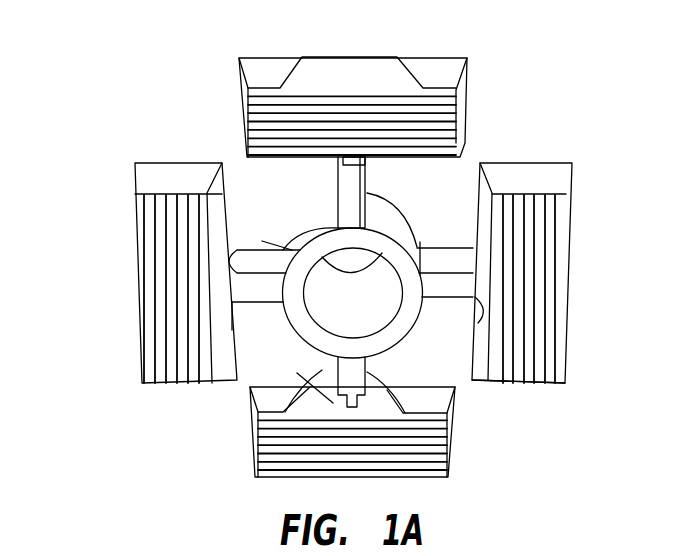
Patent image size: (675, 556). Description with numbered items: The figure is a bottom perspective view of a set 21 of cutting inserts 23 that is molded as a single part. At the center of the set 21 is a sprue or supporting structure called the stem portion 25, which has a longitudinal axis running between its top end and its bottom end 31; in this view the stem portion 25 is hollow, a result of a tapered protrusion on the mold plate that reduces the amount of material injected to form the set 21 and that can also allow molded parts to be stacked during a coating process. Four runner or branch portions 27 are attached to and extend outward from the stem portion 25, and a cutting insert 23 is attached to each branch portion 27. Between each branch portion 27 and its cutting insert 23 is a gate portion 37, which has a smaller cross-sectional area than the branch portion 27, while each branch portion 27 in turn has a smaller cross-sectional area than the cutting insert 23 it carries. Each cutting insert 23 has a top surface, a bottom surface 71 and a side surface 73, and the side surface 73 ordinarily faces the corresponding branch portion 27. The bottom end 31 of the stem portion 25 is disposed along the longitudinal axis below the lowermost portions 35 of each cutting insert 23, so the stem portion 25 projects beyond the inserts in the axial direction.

The set of cutting inserts 21 is at (100, 72).
The cutting insert 23 is at (470, 86).
The stem portion 25 is at (305, 228).
The branch portion 27 is at (443, 263).
The bottom end 31 is at (393, 328).
The lowermost portion 35 is at (563, 380).
The gate portion 37 is at (369, 159).
The bottom surface 71 is at (452, 136).
The side surface 73 is at (275, 68).